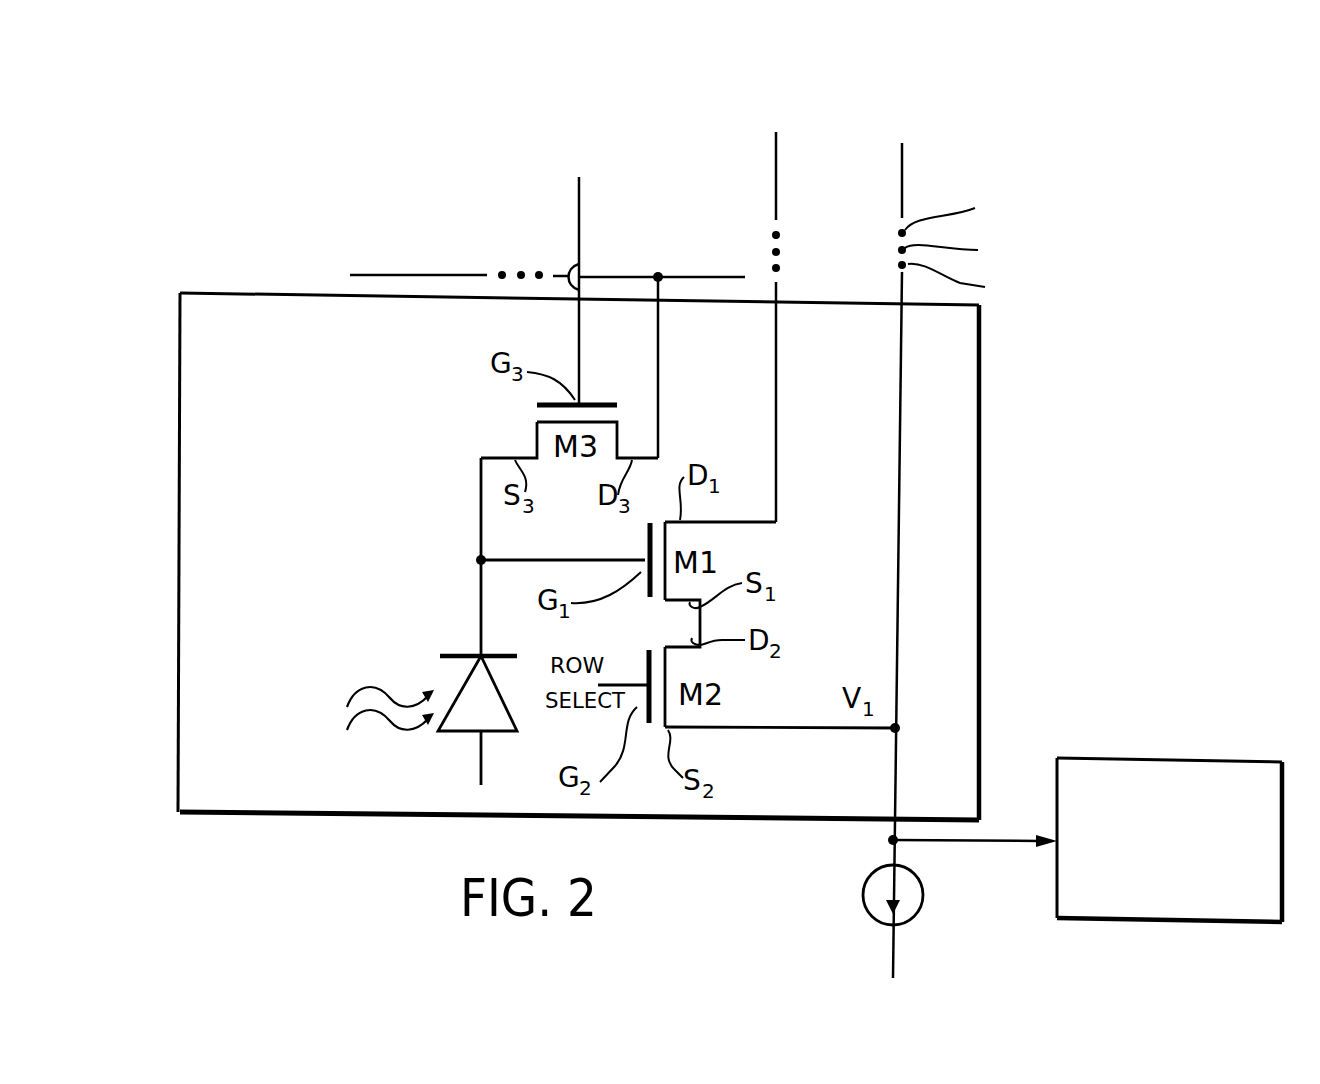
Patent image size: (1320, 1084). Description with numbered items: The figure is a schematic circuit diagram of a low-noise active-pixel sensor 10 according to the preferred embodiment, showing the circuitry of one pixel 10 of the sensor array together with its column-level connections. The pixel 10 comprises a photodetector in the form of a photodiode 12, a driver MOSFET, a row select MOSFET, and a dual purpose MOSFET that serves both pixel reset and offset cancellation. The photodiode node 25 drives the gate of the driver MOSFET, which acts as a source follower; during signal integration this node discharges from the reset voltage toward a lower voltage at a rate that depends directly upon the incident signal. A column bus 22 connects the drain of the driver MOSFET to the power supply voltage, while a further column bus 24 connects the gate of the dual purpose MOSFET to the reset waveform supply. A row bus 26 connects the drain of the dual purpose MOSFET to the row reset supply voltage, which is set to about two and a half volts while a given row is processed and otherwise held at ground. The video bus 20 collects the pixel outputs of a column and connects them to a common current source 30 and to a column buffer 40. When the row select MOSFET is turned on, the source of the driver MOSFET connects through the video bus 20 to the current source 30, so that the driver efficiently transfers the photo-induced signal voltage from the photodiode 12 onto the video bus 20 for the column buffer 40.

The low-noise active-pixel sensor 10 is at (252, 781).
The photodiode 12 is at (452, 735).
The video bus 20 is at (902, 508).
The column bus 22 is at (776, 422).
The column bus 24 is at (579, 238).
The photodiode node 25 is at (478, 560).
The row bus 26 is at (408, 275).
The current source 30 is at (926, 902).
The column buffer 40 is at (1183, 758).